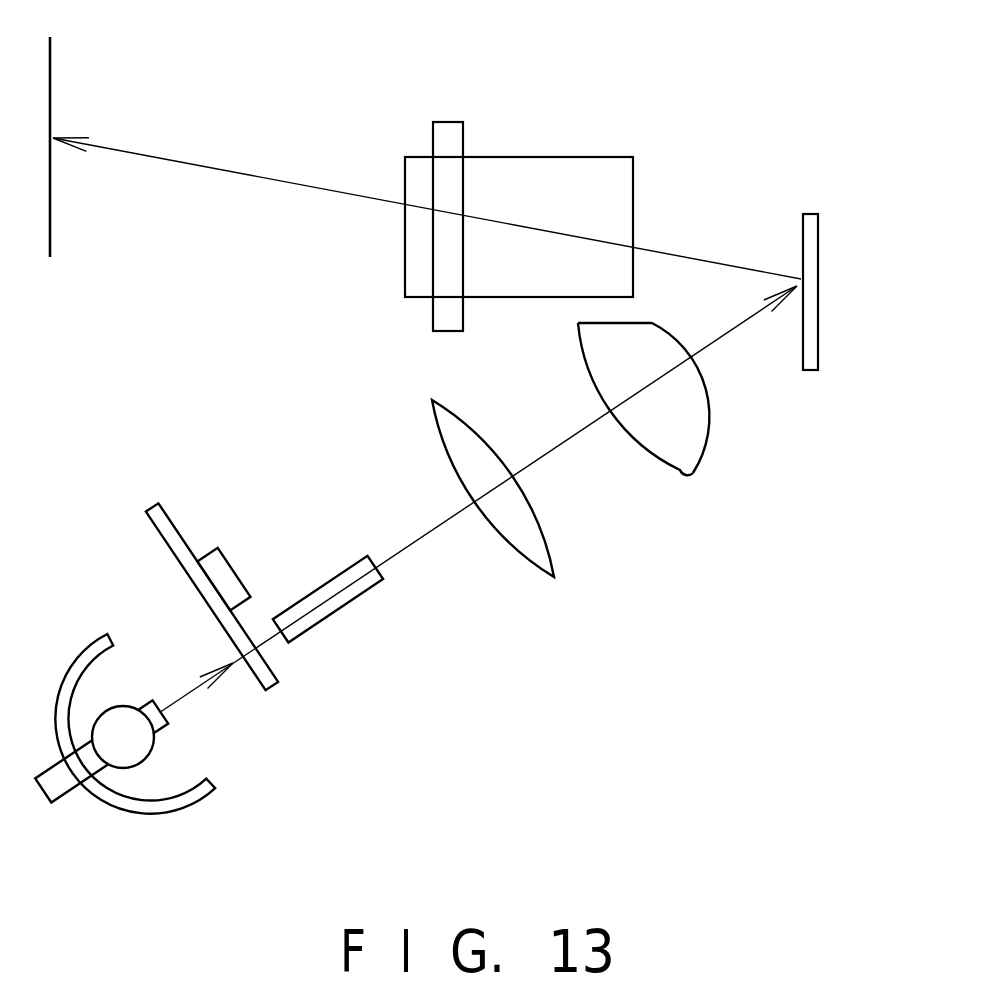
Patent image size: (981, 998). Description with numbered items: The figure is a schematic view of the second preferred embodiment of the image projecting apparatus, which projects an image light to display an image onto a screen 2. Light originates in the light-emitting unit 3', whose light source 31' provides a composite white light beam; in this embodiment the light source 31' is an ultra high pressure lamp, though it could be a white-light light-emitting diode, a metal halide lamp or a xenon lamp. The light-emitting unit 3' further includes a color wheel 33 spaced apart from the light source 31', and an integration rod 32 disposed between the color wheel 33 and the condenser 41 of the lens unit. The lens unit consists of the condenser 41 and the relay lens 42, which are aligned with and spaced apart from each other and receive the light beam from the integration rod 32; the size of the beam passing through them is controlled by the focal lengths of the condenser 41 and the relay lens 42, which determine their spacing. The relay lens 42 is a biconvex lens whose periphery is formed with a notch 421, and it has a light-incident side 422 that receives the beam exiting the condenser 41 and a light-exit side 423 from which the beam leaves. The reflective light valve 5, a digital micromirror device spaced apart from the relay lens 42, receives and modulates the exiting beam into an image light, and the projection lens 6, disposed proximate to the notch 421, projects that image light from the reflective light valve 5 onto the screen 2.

The screen 2 is at (66, 108).
The projection lens 6 is at (592, 165).
The reflective light valve 5 is at (812, 259).
The relay lens 42 is at (692, 419).
The notch 421 is at (628, 320).
The light-incident side 422 is at (668, 473).
The light-exit side 423 is at (717, 433).
The condenser 41 is at (447, 433).
The color wheel 33 is at (168, 512).
The integration rod 32 is at (333, 583).
The light source 31' is at (128, 693).
The light-emitting unit 3' is at (212, 751).